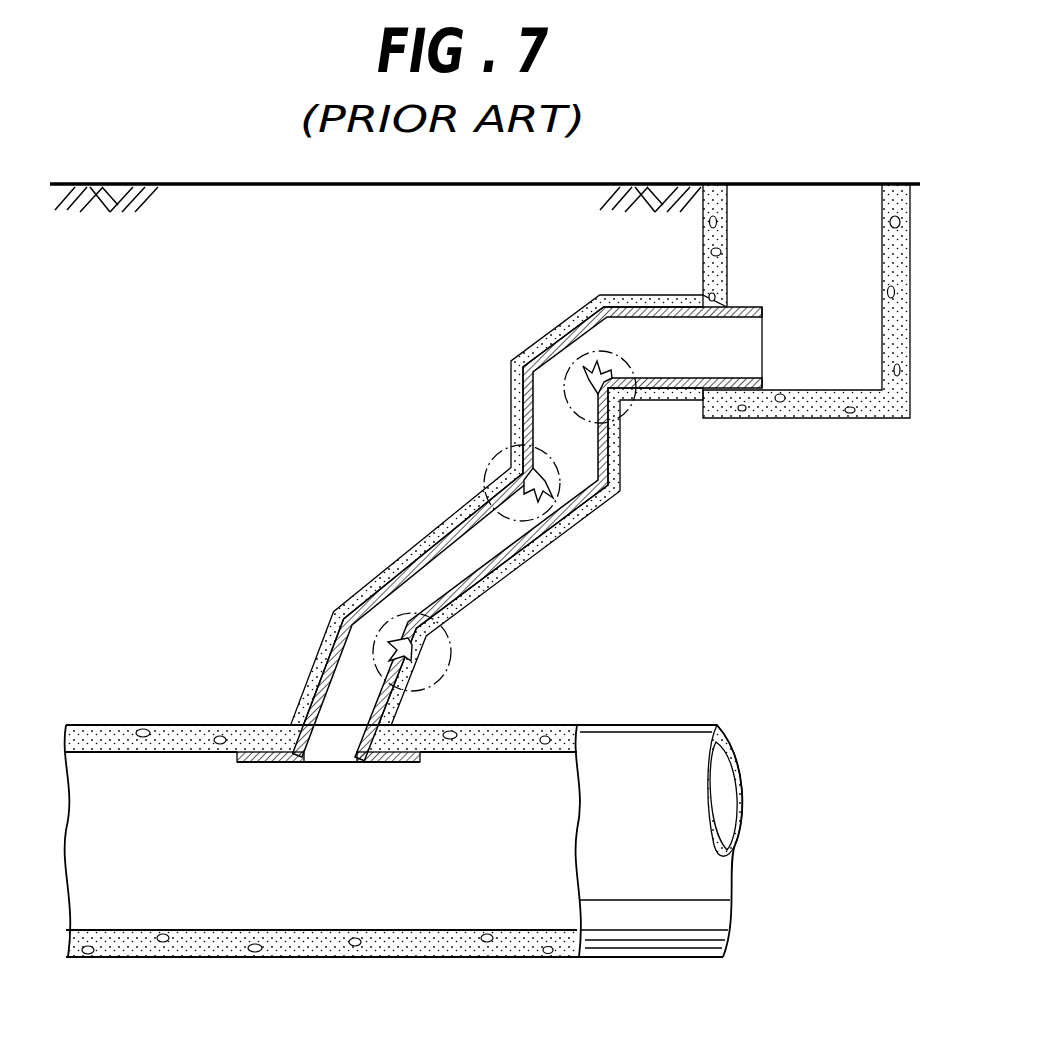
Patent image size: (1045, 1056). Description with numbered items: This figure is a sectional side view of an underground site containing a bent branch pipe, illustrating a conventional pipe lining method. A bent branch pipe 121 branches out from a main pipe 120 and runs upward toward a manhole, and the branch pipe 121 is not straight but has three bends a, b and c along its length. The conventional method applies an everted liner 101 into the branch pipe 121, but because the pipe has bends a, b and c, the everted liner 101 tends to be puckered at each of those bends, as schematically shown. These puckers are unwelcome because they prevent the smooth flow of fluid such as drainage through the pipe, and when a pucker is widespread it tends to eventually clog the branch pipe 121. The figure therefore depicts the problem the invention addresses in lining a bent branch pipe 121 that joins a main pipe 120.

The everted liner 101 is at (708, 318).
The bent branch pipe 121 is at (525, 563).
The main pipe 120 is at (510, 958).
The bend a is at (630, 364).
The bend b is at (500, 453).
The bend c is at (451, 660).